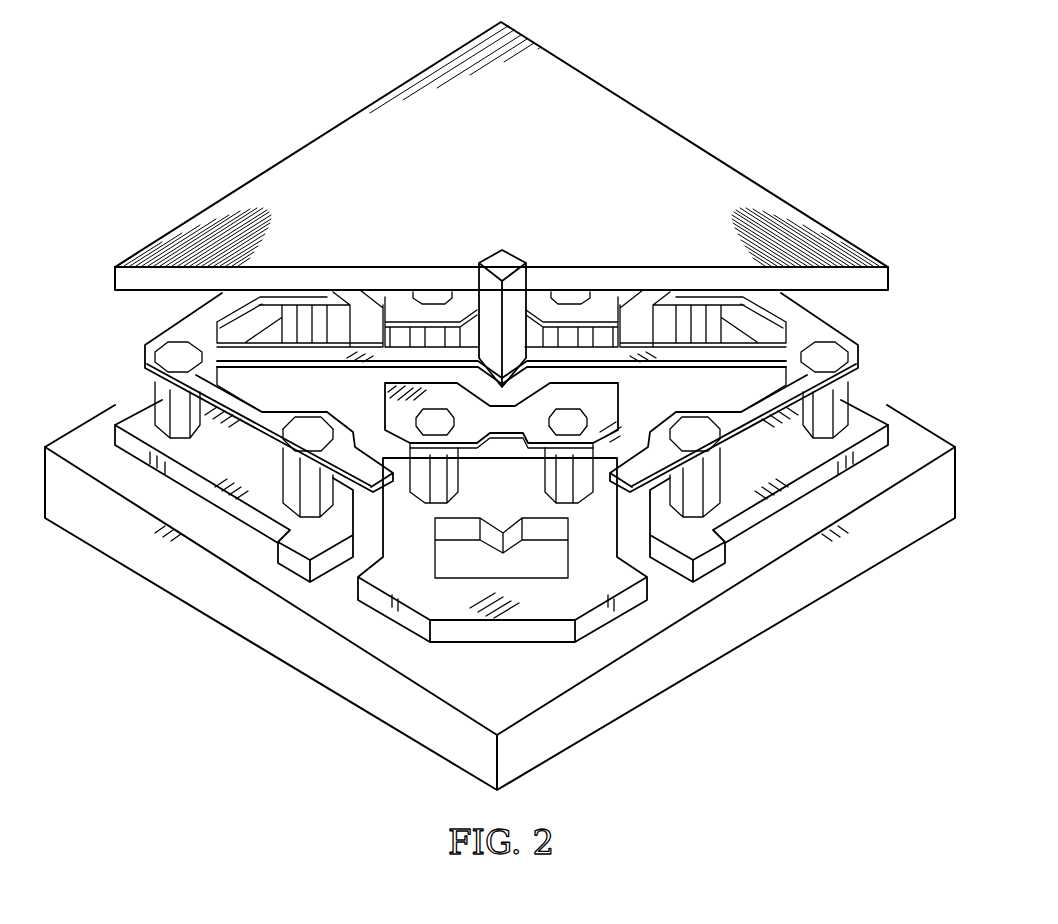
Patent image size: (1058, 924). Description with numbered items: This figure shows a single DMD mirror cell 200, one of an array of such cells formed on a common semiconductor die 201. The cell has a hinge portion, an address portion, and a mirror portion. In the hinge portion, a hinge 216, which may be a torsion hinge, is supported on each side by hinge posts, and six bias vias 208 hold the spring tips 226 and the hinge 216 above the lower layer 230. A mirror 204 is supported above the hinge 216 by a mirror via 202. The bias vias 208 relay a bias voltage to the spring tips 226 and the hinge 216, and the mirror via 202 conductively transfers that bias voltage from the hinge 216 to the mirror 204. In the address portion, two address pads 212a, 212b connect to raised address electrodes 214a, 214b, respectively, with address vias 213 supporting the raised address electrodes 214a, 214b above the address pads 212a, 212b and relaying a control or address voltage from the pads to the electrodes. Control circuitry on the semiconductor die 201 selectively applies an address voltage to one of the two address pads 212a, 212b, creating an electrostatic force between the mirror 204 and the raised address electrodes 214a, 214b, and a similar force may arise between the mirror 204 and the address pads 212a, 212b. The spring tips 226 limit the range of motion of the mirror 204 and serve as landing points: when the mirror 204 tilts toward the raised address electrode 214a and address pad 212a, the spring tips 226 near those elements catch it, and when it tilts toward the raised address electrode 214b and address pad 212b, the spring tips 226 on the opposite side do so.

The DMD mirror cell 200 is at (346, 71).
The semiconductor die 201 is at (228, 617).
The mirror via 202 is at (497, 251).
The mirror 204 is at (652, 128).
The bias vias 208 is at (153, 392).
The address pad 212a is at (503, 636).
The address pad 212b is at (609, 298).
The address vias 213 is at (430, 493).
The raised address electrode 214a is at (503, 444).
The raised address electrode 214b is at (396, 298).
The hinge 216 is at (316, 355).
The spring tips 226 is at (390, 494).
The lower layer 230 is at (203, 493).